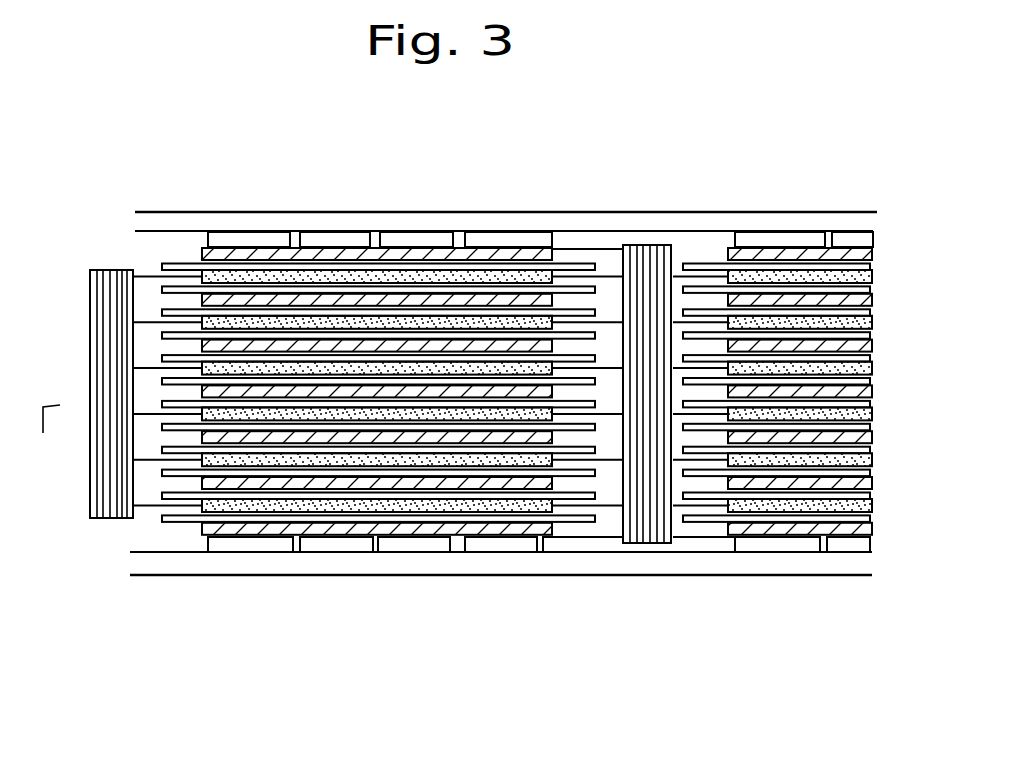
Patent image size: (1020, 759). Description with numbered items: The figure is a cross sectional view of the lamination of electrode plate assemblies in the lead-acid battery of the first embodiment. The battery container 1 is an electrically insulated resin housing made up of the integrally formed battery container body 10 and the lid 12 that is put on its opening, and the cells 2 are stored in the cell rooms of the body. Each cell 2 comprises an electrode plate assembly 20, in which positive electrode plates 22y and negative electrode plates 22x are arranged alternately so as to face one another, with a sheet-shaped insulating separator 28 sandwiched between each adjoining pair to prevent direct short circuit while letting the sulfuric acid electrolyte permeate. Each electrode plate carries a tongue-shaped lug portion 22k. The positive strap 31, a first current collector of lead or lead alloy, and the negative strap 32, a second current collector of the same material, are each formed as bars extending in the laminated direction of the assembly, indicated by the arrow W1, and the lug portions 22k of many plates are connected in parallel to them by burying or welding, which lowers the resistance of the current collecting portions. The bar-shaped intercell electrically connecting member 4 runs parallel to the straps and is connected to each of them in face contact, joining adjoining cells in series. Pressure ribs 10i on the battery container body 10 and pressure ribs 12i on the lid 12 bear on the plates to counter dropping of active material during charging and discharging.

The battery container 1 is at (471, 405).
The cell 2 is at (507, 543).
The intercell electrically connecting member 4 is at (653, 246).
The battery container body 10 is at (732, 575).
The pressure ribs 10i is at (300, 542).
The lid 12 is at (212, 212).
The pressure ribs 12i is at (242, 231).
The electrode plate assembly 20 is at (528, 552).
The lug portion 22k is at (149, 277).
The negative electrode plate 22x is at (502, 390).
The positive electrode plate 22y is at (247, 370).
The separator 28 is at (167, 287).
The positive strap 31 is at (671, 260).
The negative strap 32 is at (633, 245).
The laminated direction arrow W1 is at (63, 387).